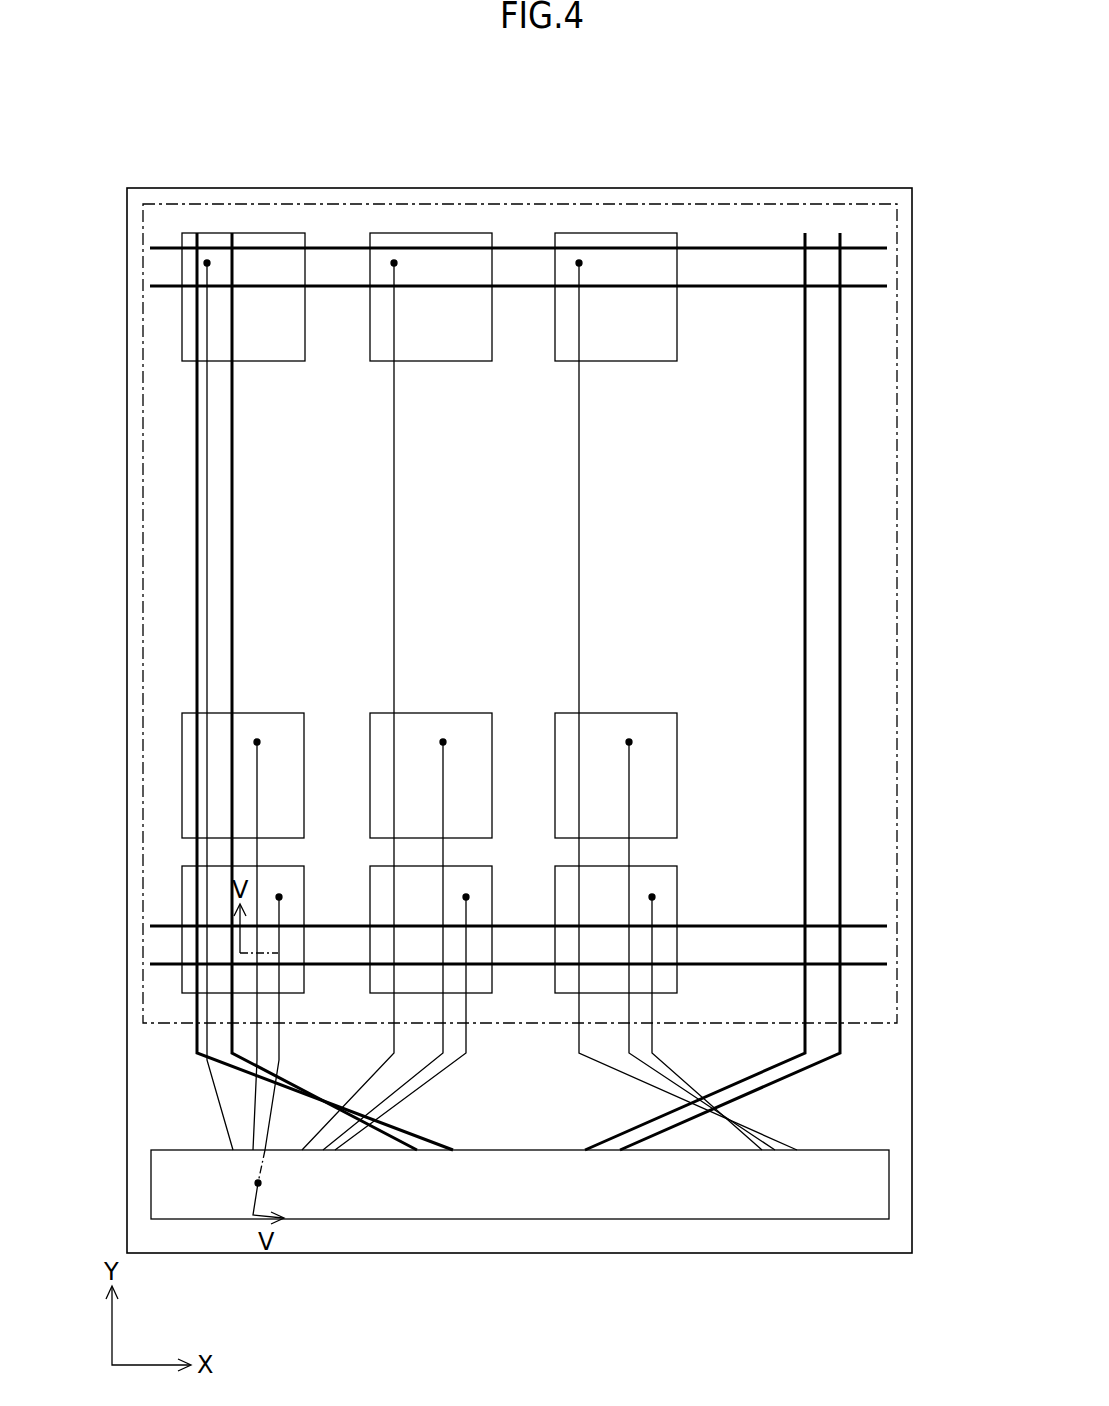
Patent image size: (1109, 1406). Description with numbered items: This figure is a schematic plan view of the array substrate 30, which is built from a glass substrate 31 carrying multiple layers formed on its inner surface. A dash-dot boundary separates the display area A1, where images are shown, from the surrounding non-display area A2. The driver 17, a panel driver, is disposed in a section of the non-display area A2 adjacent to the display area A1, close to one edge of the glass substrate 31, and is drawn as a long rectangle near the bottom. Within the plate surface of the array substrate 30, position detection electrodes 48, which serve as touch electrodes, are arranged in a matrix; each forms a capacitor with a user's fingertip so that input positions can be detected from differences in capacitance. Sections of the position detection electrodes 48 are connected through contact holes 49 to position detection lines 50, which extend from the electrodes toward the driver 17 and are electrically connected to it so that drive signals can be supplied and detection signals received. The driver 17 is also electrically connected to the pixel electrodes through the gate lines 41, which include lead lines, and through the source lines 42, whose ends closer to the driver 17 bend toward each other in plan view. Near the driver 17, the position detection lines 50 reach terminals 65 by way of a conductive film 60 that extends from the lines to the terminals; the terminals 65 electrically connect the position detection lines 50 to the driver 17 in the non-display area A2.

The array substrate 30 is at (859, 145).
The glass substrate 31 is at (877, 1240).
The driver 17 is at (822, 1203).
The gate lines 41 is at (723, 925).
The source lines 42 is at (810, 952).
The position detection electrodes 48 is at (188, 795).
The contact holes 49 is at (256, 741).
The position detection lines 50 is at (260, 775).
The conductive film 60 is at (273, 1123).
The terminals 65 is at (258, 1183).
The display area A1 is at (895, 457).
The non-display area A2 is at (817, 1106).